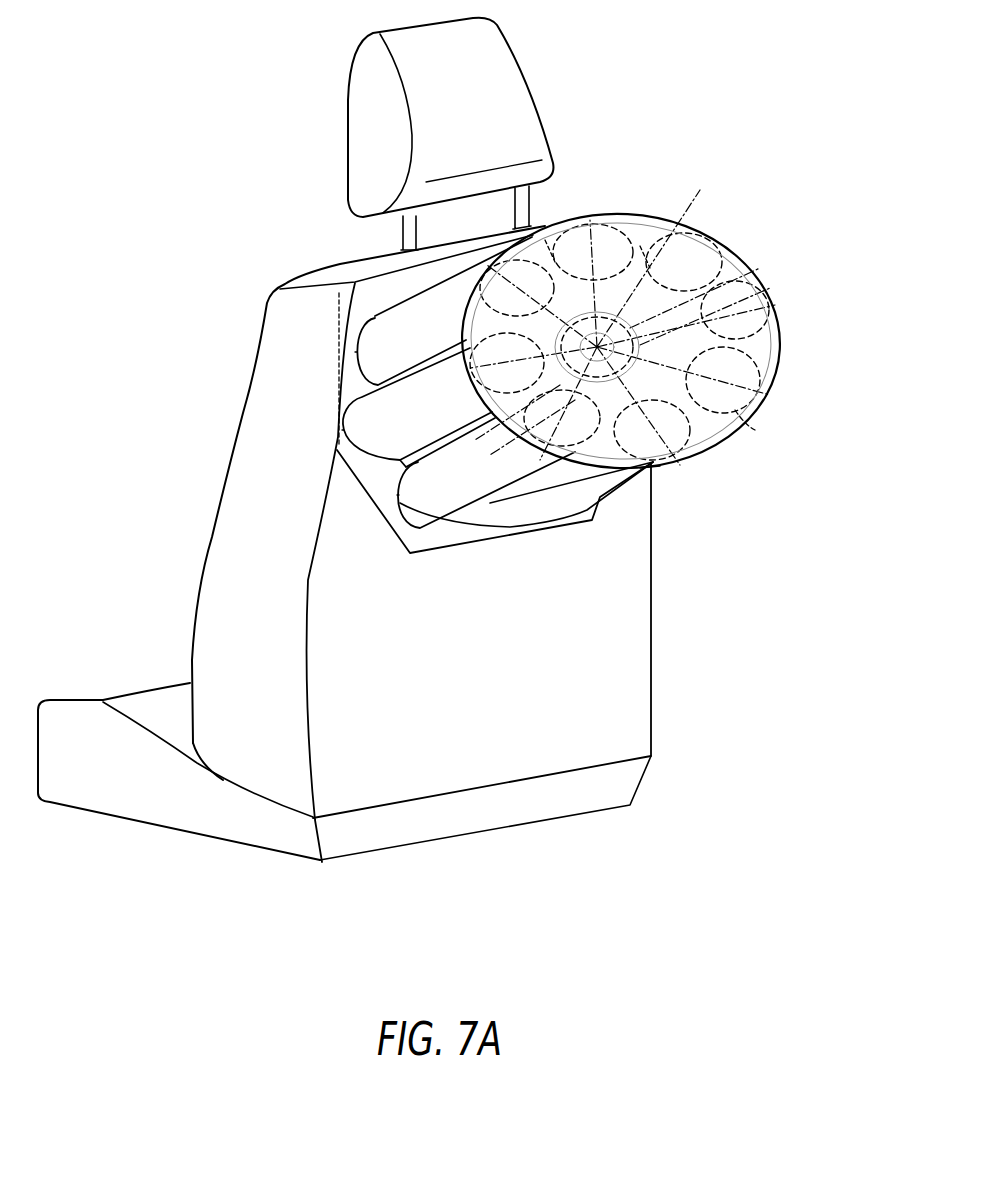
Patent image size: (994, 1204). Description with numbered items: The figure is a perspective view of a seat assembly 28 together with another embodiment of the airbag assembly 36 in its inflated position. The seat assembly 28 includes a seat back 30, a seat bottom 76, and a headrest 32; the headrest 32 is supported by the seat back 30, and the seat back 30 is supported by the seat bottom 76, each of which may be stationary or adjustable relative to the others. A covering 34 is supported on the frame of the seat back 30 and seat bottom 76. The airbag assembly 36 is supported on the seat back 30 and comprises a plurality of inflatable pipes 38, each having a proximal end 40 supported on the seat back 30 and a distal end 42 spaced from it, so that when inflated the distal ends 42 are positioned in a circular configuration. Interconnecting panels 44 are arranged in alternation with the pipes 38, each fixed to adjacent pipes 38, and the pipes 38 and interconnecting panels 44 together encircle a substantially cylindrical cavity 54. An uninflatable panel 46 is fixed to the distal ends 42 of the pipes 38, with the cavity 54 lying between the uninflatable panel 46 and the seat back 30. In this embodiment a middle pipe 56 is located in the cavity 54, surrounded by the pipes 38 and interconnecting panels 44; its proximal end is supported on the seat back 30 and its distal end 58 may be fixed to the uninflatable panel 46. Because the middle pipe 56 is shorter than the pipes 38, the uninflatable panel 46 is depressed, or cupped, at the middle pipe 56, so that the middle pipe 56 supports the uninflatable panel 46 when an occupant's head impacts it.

The seat assembly 28 is at (215, 283).
The seat back 30 is at (237, 587).
The headrest 32 is at (483, 51).
The covering 34 is at (446, 548).
The airbag assembly 36 is at (586, 203).
The pipes 38 is at (385, 338).
The proximal end 40 is at (348, 363).
The distal end 42 is at (470, 318).
The interconnecting panels 44 is at (375, 386).
The uninflatable panel 46 is at (722, 242).
The cavity 54 is at (745, 422).
The middle pipe 56 is at (633, 361).
The distal end of the middle pipe 58 is at (655, 470).
The seat bottom 76 is at (67, 743).